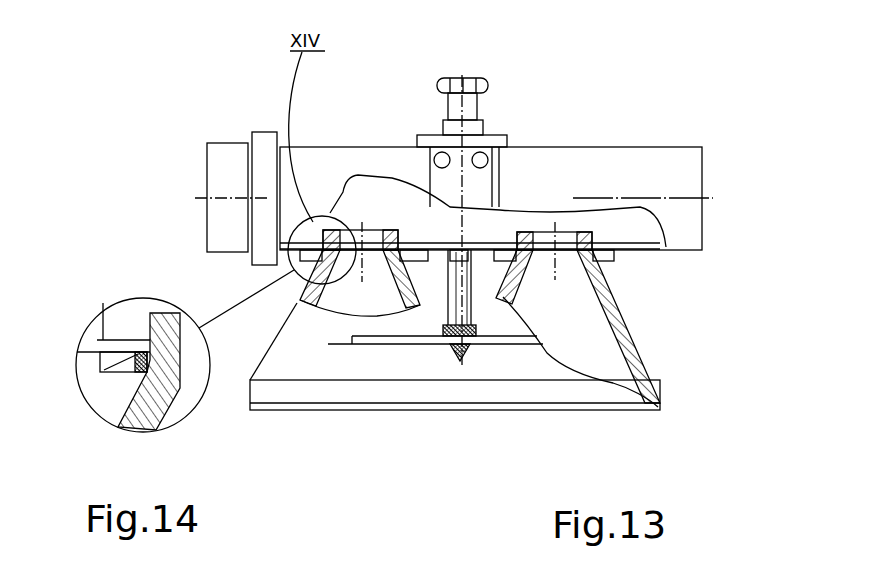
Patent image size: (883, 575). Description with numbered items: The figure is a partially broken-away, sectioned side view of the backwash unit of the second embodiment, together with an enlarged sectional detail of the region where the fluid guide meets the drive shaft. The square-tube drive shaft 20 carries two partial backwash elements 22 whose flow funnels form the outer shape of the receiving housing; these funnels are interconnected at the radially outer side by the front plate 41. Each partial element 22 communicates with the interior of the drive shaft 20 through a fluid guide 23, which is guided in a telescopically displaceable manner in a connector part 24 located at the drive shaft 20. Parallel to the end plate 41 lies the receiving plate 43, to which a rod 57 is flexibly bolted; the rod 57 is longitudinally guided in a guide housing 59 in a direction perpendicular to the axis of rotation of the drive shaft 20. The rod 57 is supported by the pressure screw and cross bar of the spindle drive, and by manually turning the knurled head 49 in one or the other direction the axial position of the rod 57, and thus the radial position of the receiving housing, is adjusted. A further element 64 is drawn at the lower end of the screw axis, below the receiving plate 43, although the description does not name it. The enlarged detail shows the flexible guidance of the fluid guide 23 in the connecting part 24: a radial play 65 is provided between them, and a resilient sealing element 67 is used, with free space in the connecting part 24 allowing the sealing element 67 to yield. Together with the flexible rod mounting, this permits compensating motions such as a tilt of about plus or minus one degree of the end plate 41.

In FIG. 13, the drive shaft 20 is at (588, 158).
In FIG. 13, the partial backwash element 22 is at (655, 352).
In FIG. 13, the fluid guide 23 is at (393, 229).
In FIG. 13, the connector part 24 is at (414, 247).
In FIG. 14, the connector part 24 is at (100, 367).
In FIG. 13, the front plate 41 is at (610, 400).
In FIG. 13, the receiving plate 43 is at (398, 338).
In FIG. 13, the knurled head 49 is at (490, 82).
In FIG. 13, the rod 57 is at (490, 283).
In FIG. 13, the guide housing 59 is at (448, 186).
In FIG. 13, the pin 64 is at (468, 347).
In FIG. 14, the radial play 65 is at (142, 340).
In FIG. 14, the resilient sealing element 67 is at (152, 368).